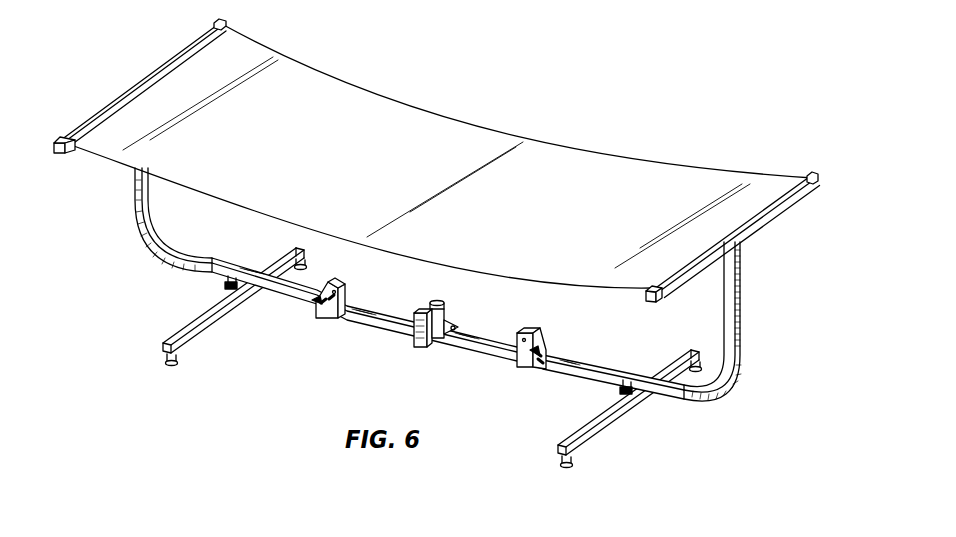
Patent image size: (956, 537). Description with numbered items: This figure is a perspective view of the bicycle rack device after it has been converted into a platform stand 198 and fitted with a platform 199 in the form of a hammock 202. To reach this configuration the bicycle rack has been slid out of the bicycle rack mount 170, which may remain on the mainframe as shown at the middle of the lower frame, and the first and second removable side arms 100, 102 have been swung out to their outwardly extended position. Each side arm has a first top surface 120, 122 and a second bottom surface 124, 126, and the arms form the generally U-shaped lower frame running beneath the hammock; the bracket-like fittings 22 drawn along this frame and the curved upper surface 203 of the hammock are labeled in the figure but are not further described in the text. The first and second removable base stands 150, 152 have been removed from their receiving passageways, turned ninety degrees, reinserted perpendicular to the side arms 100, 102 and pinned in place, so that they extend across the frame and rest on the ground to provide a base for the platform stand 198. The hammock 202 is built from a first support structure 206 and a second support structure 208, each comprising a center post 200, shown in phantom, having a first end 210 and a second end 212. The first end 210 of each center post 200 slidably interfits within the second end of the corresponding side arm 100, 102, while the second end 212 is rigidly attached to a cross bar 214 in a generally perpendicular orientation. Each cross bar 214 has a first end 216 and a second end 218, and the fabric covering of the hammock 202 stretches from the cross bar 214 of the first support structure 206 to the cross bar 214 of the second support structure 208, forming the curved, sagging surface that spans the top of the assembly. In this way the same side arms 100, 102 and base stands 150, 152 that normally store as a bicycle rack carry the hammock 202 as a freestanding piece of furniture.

The clamp assembly 22 is at (452, 344).
The first removable side arm 100 is at (443, 294).
The second removable side arm 102 is at (717, 396).
The first top surface 120 is at (218, 264).
The first top surface 122 is at (600, 358).
The second bottom surface 124 is at (168, 264).
The second bottom surface 126 is at (741, 343).
The first removable base stand 150 is at (190, 340).
The second removable base stand 152 is at (607, 424).
The bicycle rack mount 170 is at (373, 336).
The platform stand 198 is at (494, 378).
The platform 199 is at (476, 78).
The center post 200 is at (744, 285).
The hammock 202 is at (500, 205).
The curved panel 203 is at (413, 143).
The first support structure 206 is at (744, 240).
The second support structure 208 is at (58, 139).
The first end 210 is at (744, 318).
The second end 212 is at (746, 253).
The cross bar 214 is at (663, 300).
The first end 216 is at (651, 303).
The second end 218 is at (812, 173).